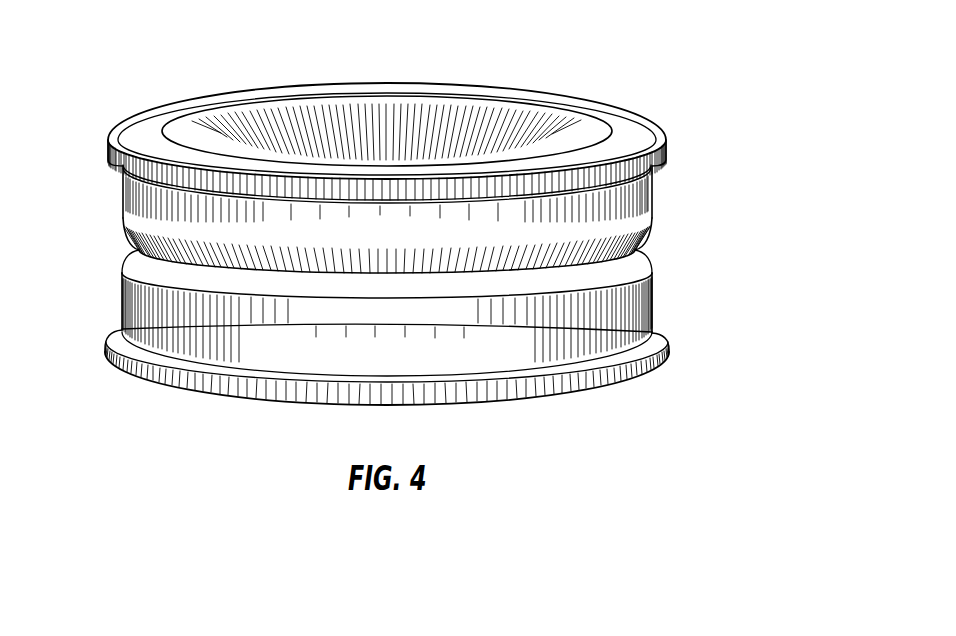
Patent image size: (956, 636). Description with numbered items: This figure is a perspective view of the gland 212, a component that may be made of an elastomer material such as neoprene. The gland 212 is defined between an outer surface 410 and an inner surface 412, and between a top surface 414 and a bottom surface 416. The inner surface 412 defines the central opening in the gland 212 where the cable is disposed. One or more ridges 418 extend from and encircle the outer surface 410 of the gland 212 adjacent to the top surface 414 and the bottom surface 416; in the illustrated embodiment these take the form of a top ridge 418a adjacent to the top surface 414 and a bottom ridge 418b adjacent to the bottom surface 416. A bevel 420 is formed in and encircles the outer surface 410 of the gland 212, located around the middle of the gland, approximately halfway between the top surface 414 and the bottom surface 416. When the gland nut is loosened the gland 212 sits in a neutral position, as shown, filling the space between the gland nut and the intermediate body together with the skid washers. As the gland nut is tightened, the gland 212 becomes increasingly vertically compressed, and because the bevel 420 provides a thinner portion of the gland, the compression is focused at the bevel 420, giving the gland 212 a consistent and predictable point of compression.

The gland 212 is at (664, 48).
The outer surface 410 is at (652, 206).
The inner surface 412 is at (240, 150).
The top surface 414 is at (470, 84).
The bottom surface 416 is at (563, 394).
The ridges 418 is at (456, 194).
The top ridge 418a is at (667, 147).
The bottom ridge 418b is at (668, 355).
The bevel 420 is at (146, 246).